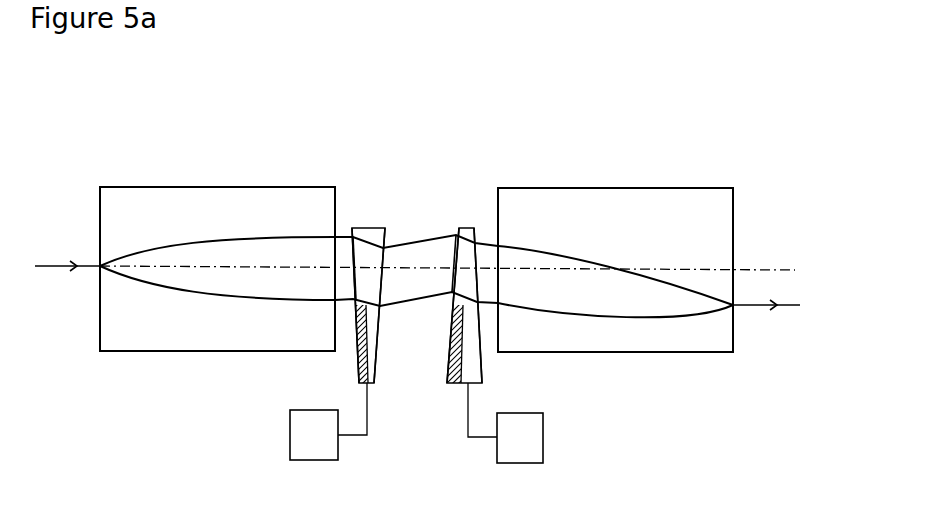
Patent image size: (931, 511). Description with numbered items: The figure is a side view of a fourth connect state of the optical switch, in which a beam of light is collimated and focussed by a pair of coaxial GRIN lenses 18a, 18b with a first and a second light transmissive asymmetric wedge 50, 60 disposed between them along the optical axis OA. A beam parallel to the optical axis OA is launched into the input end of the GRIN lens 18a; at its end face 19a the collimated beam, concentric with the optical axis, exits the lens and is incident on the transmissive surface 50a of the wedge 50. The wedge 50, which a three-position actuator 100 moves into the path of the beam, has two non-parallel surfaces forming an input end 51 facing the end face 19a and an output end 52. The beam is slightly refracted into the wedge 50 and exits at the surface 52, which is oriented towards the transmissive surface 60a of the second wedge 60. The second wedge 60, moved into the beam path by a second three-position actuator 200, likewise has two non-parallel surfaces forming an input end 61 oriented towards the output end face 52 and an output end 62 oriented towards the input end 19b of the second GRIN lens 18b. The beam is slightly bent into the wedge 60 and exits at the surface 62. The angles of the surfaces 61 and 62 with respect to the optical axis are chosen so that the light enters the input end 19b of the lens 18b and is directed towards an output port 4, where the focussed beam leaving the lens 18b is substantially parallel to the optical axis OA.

The GRIN lens 18a is at (164, 187).
The GRIN lens 18b is at (671, 188).
The end face of the GRIN lens 19a is at (335, 328).
The input end of the lens 19b is at (498, 337).
The wedge 50 is at (370, 347).
The transmissive surface of the wedge 50a is at (360, 253).
The input end face of the wedge 51 is at (351, 227).
The output end face of the wedge 52 is at (386, 232).
The second wedge 60 is at (465, 377).
The transmissive surface of the wedge 60a is at (466, 253).
The input end of the second wedge 61 is at (457, 229).
The output end of the second wedge 62 is at (476, 230).
The three-position actuator 100 is at (314, 435).
The second three-position actuator 200 is at (520, 438).
The output port 4 is at (736, 306).
The optical axis OA is at (763, 270).